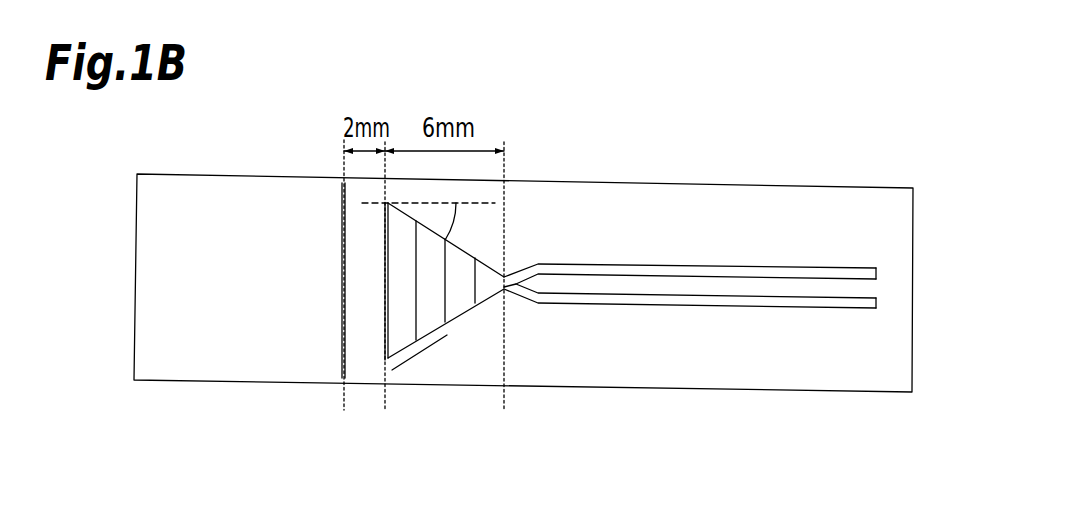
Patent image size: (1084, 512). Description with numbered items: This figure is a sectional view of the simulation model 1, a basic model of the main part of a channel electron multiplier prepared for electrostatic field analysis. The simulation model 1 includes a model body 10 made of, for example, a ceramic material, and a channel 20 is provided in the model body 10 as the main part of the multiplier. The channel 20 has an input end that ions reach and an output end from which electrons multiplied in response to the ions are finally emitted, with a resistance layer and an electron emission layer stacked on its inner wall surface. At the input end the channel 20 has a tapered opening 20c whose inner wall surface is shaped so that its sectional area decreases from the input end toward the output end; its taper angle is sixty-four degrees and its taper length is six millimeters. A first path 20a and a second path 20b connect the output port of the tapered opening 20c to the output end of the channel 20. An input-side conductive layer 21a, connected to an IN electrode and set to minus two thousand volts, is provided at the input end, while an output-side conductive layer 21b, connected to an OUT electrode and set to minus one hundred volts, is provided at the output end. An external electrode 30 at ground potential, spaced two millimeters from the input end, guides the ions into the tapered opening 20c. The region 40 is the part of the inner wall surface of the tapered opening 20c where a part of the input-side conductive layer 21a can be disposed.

The simulation model 1 is at (682, 155).
The model body 10 is at (578, 181).
The channel 20 is at (594, 352).
The first path 20a is at (730, 306).
The second path 20b is at (770, 267).
The tapered opening 20c is at (463, 277).
The input-side conductive layer 21a is at (385, 357).
The output-side conductive layer 21b is at (878, 298).
The external electrode 30 is at (342, 332).
The region 40 is at (420, 353).